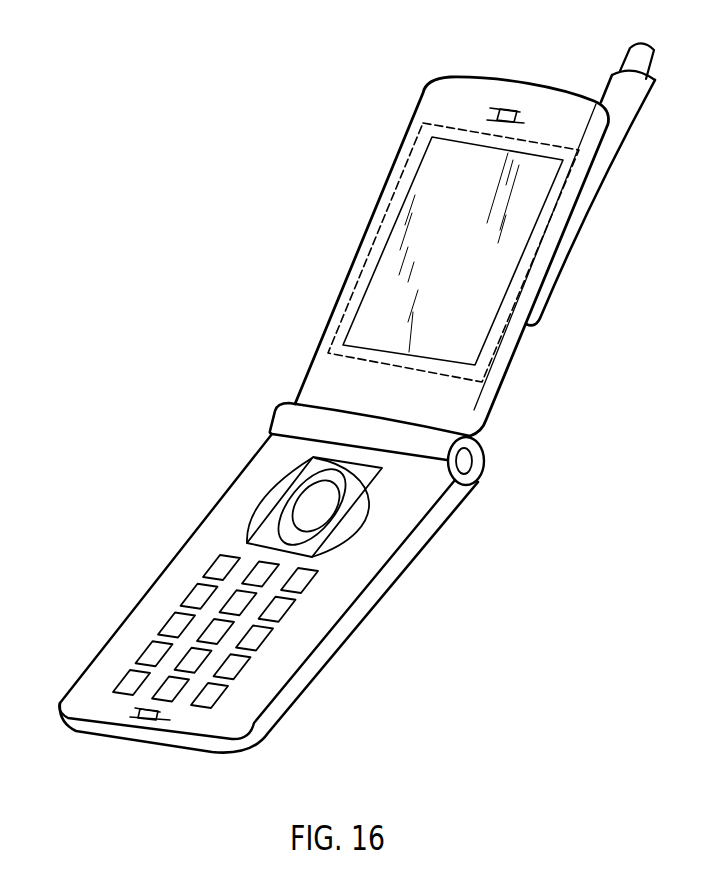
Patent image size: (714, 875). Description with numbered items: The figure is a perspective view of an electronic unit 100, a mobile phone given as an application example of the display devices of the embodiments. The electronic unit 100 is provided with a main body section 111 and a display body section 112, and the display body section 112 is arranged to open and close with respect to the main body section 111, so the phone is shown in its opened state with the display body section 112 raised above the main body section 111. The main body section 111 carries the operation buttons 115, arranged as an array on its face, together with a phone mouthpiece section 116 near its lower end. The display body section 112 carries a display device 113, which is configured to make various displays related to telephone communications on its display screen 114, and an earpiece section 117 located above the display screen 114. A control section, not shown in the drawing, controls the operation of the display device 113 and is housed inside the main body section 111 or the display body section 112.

The electronic unit 100 is at (365, 73).
The main body section 111 is at (244, 425).
The display body section 112 is at (690, 52).
The display device 113 is at (377, 237).
The display screen 114 is at (551, 164).
The operation buttons 115 is at (290, 582).
The phone mouthpiece section 116 is at (137, 723).
The earpiece section 117 is at (505, 108).